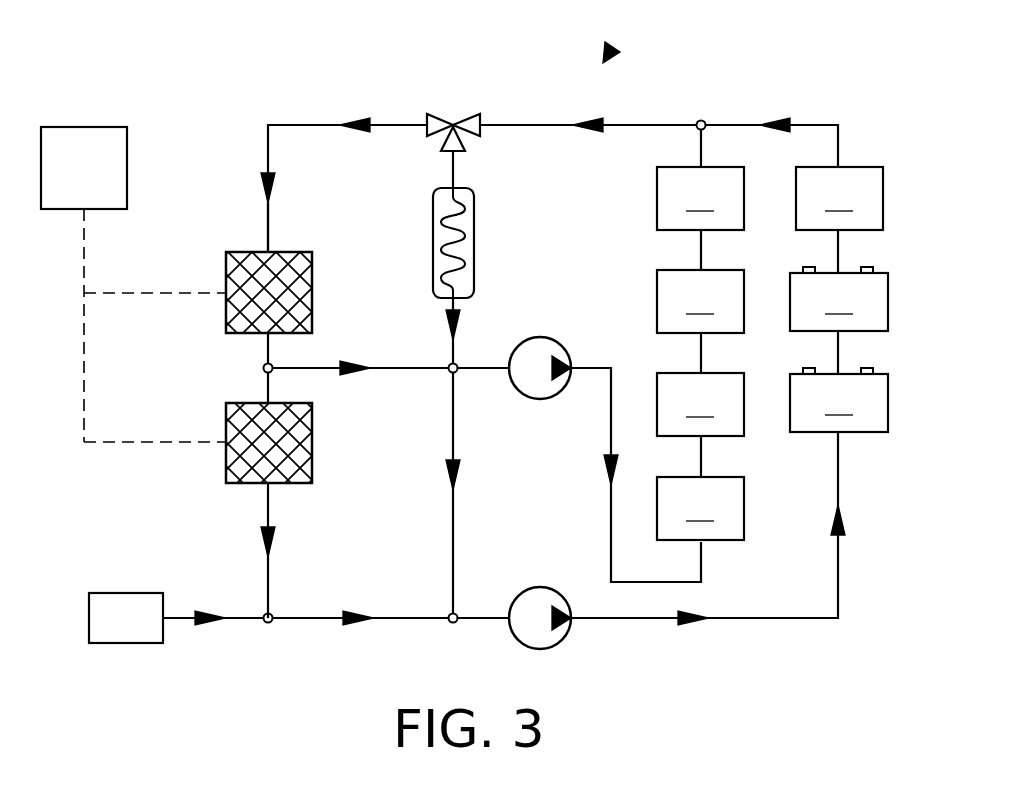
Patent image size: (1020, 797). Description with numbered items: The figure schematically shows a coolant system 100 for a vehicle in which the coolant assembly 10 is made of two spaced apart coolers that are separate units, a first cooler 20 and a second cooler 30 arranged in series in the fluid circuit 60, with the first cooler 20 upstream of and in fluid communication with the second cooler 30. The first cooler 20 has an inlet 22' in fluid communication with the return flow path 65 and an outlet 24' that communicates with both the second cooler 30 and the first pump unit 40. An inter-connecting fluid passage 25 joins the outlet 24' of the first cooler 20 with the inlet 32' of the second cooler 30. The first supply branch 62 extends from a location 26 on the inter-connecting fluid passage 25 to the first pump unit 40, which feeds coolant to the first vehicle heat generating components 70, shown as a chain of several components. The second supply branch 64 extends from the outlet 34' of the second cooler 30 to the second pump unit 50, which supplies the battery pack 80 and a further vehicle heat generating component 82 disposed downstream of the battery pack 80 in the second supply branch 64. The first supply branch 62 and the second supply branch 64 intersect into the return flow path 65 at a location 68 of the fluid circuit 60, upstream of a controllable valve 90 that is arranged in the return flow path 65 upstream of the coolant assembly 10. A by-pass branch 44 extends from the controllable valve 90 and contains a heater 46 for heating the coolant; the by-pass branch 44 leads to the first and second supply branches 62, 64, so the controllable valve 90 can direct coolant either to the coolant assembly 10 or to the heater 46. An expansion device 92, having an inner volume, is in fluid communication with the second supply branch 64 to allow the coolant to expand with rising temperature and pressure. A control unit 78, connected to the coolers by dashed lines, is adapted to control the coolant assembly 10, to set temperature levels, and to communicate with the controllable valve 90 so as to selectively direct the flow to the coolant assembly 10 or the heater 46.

The coolant system 100 is at (612, 50).
The coolant assembly 10 is at (216, 407).
The first cooler 20 is at (226, 272).
The second cooler 30 is at (226, 464).
The inlet 22' is at (229, 224).
The outlet 24' is at (211, 328).
The inter-connecting fluid passage 25 is at (268, 362).
The location 26 is at (268, 375).
The inlet 32' is at (211, 412).
The outlet 34' is at (230, 550).
The first pump unit 40 is at (540, 337).
The by-pass branch 44 is at (453, 166).
The heater 46 is at (474, 246).
The second pump unit 50 is at (540, 587).
The fluid circuit 60 is at (312, 125).
The first supply branch 62 is at (402, 368).
The second supply branch 64 is at (402, 618).
The return flow path 65 is at (402, 125).
The location 68 is at (702, 121).
The first vehicle heat generating component 70 is at (700, 353).
The control unit 78 is at (85, 127).
The battery pack 80 is at (839, 349).
The vehicle heat generating component 82 is at (839, 220).
The controllable valve 90 is at (466, 116).
The expansion device 92 is at (126, 593).